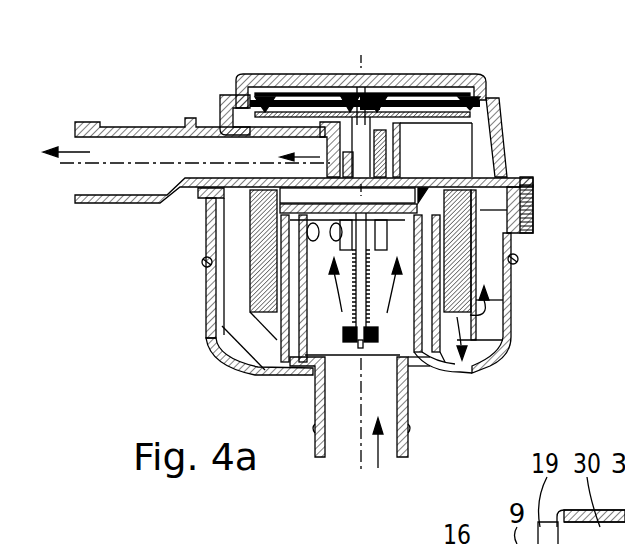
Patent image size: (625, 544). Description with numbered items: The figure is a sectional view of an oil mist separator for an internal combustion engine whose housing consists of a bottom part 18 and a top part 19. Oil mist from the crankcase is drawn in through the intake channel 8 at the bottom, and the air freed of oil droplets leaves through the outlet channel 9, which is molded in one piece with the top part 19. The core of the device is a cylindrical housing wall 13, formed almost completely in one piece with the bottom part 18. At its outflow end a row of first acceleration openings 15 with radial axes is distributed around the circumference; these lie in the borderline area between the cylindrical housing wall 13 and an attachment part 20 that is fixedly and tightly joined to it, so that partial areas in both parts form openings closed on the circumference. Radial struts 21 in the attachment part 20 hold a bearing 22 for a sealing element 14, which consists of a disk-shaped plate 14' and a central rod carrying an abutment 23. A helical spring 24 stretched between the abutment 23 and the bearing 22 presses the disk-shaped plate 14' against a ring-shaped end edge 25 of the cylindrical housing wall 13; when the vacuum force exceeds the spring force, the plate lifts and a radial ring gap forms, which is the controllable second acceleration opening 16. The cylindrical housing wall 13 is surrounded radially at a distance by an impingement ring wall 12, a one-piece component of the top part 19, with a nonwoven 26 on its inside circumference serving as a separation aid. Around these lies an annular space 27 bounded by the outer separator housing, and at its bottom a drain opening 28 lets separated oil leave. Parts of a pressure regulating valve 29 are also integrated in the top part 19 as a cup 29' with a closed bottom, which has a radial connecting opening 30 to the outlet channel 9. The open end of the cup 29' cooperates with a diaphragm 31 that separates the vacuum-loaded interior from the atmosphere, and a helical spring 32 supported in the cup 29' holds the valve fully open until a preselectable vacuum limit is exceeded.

The intake channel 8 is at (347, 447).
The outlet channel 9 is at (113, 148).
The impingement ring wall 12 is at (480, 234).
The cylindrical housing wall 13 is at (250, 340).
The sealing element 14 is at (437, 132).
The disk-shaped plate 14' is at (502, 239).
The first acceleration openings 15 is at (297, 233).
The second acceleration opening 16 is at (244, 110).
The bottom part 18 is at (497, 357).
The top part 19 is at (223, 118).
The attachment part 20 is at (292, 232).
The radial struts 21 is at (498, 217).
The bearing 22 is at (519, 260).
The abutment 23 is at (345, 338).
The helical spring 24 is at (345, 290).
The ring-shaped end edge 25 is at (530, 182).
The nonwoven 26 is at (474, 290).
The annular space 27 is at (486, 317).
The drain opening 28 is at (462, 374).
The pressure regulating valve 29 is at (479, 105).
The cup 29' is at (367, 69).
The connecting opening 30 is at (265, 185).
The diaphragm 31 is at (297, 110).
The helical spring 32 is at (414, 144).